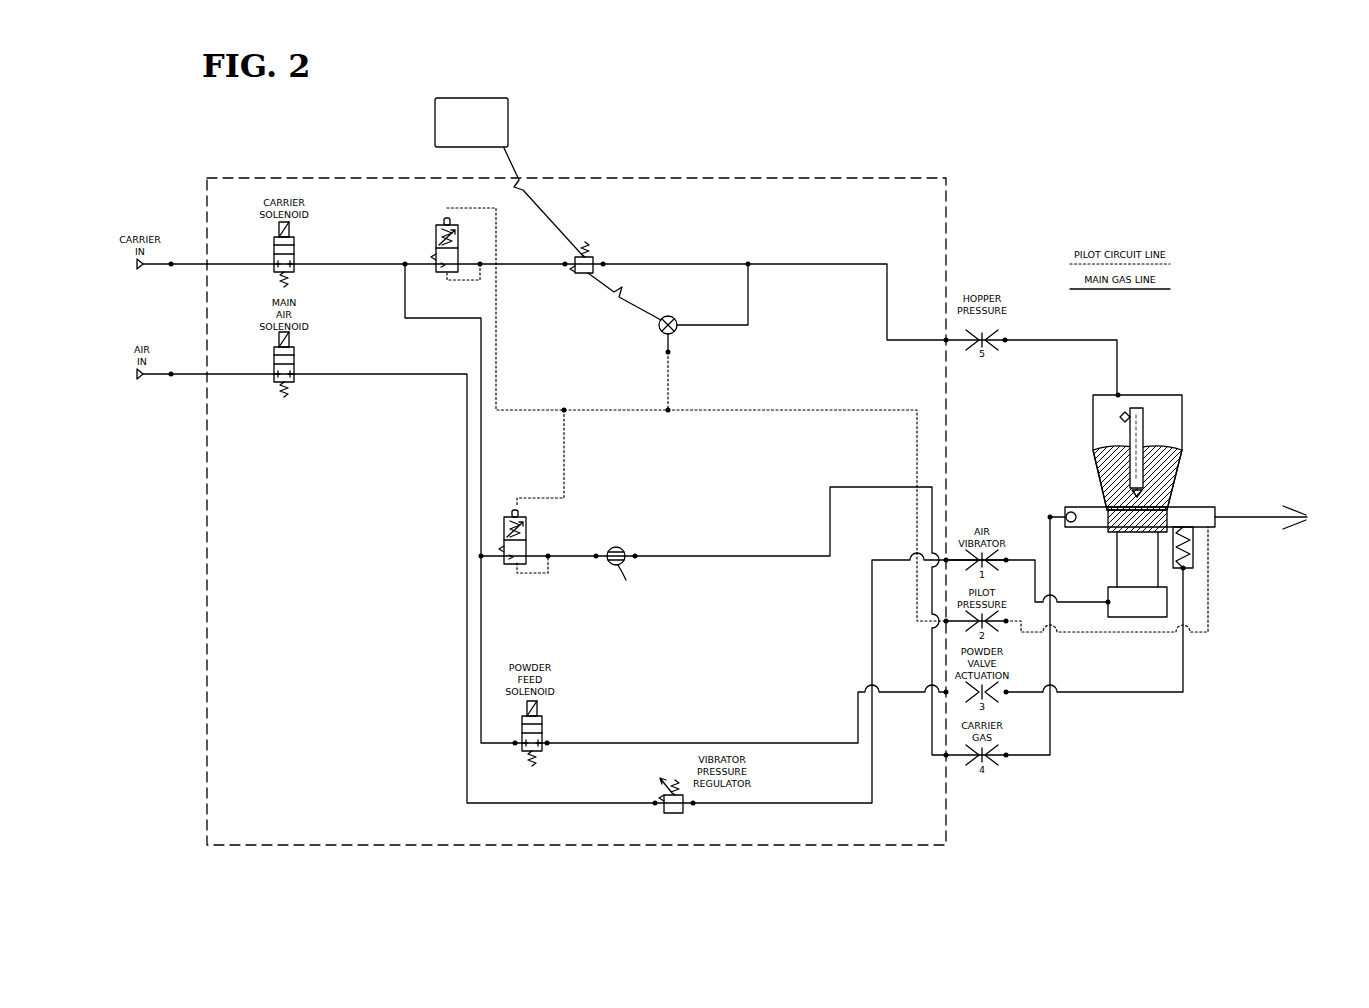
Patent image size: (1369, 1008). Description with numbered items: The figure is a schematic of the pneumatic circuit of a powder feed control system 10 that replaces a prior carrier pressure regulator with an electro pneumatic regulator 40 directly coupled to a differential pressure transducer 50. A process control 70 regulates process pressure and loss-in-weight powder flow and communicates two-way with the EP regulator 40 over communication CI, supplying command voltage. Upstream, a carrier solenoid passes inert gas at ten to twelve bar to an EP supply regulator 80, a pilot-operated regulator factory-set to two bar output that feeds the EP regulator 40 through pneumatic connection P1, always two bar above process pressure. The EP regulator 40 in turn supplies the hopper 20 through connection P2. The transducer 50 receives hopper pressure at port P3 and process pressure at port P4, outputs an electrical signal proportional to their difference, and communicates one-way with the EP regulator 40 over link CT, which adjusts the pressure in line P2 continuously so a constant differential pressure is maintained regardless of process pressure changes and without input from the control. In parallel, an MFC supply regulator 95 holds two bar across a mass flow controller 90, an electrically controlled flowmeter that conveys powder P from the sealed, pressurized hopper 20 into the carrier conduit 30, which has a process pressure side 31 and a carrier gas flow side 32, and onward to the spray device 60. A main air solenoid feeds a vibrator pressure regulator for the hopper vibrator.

The powder feed control system 10 is at (1035, 128).
The hopper 20 is at (1126, 481).
The carrier conduit 30 is at (1123, 452).
The process pressure side 31 is at (1075, 500).
The carrier gas flow side 32 is at (1210, 534).
The electro pneumatic regulator 40 is at (576, 279).
The differential pressure transducer 50 is at (655, 336).
The spray device 60 is at (1288, 490).
The process control 70 is at (512, 124).
The EP supply regulator 80 is at (436, 242).
The mass flow controller 90 is at (608, 578).
The MFC supply regulator 95 is at (508, 578).
The powder P is at (1166, 466).
The input from pressure regulator P1 is at (533, 262).
The input from hopper pressure P2 is at (672, 263).
The input from hopper pressure P3 is at (750, 300).
The input from process pressure P4 is at (672, 376).
The communication CI is at (538, 195).
The communication link CT is at (620, 293).